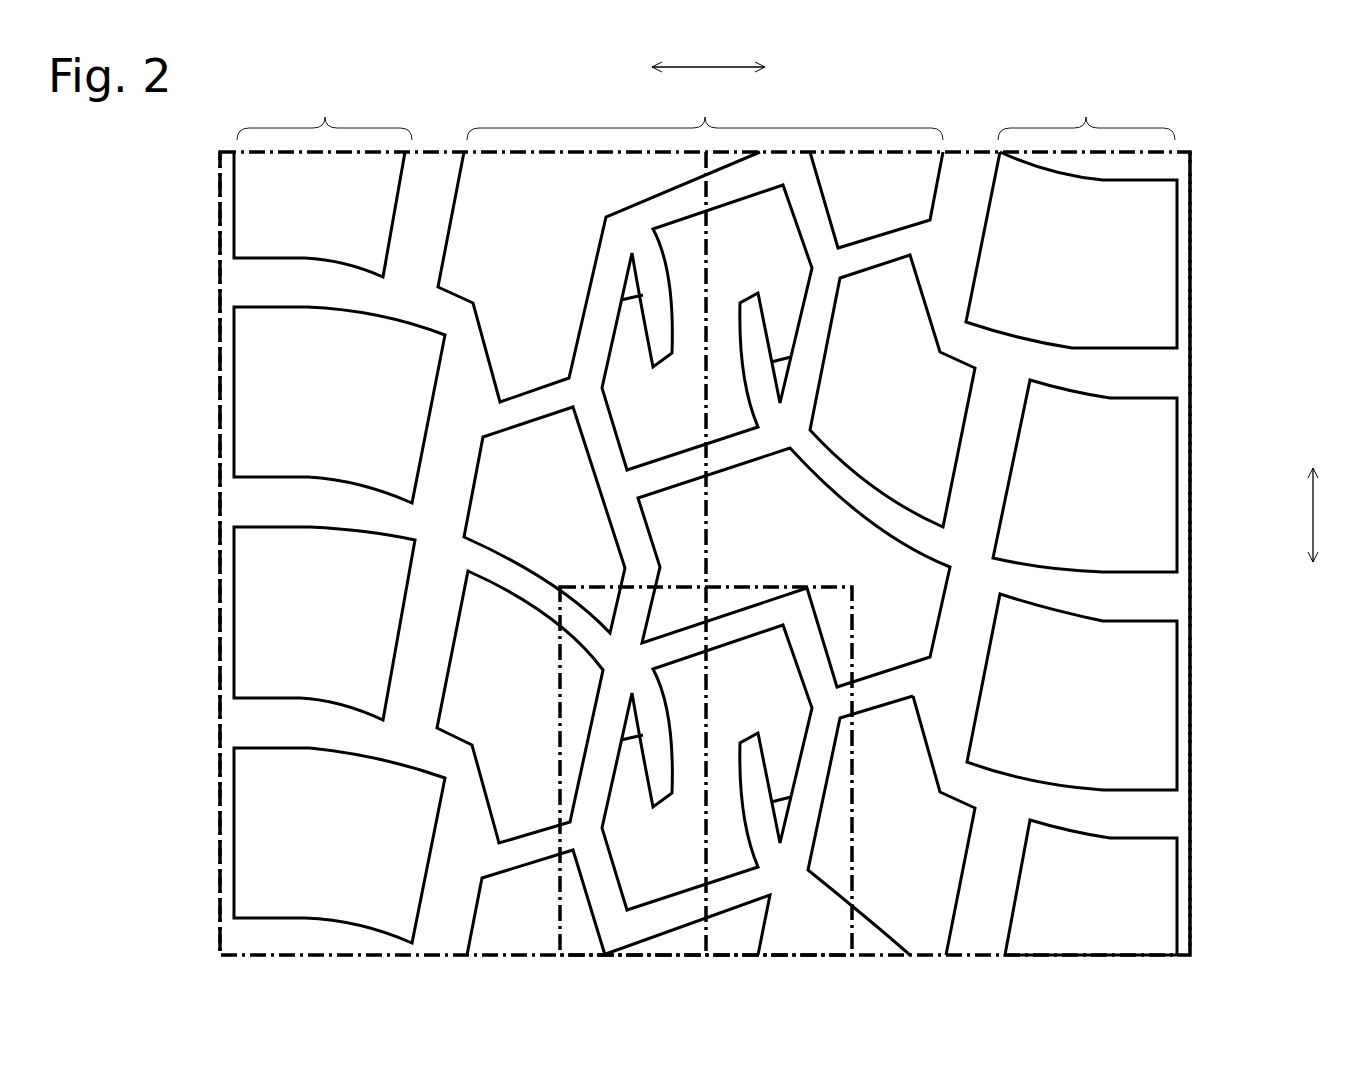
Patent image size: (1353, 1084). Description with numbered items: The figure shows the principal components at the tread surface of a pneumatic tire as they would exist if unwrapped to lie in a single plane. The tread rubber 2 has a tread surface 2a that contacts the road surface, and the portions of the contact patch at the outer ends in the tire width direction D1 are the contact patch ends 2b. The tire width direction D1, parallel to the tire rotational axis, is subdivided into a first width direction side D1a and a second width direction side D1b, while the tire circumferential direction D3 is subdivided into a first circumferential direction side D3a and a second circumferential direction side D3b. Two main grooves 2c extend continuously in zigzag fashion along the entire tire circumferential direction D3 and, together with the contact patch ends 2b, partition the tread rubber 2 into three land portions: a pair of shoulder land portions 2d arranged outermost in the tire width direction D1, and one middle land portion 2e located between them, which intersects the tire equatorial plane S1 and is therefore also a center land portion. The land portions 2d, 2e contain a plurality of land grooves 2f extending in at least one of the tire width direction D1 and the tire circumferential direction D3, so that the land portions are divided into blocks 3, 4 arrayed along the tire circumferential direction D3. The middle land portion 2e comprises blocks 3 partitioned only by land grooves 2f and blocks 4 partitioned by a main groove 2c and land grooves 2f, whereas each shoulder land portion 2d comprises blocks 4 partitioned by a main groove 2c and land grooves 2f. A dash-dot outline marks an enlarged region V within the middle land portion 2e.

The tread rubber 2 is at (1174, 170).
The tread surface 2a is at (1135, 253).
The contact patch end 2b is at (1178, 312).
The main groove 2c is at (437, 149).
The shoulder land portion 2d is at (705, 522).
The middle land portion 2e is at (693, 522).
The land groove 2f is at (596, 300).
The block 3 is at (797, 312).
The block 4 is at (455, 194).
The tire equatorial plane S1 is at (704, 172).
The enlarged region V is at (589, 582).
The tire width direction D1 is at (708, 52).
The first width direction side D1a is at (790, 67).
The second width direction side D1b is at (624, 67).
The tire circumferential direction D3 is at (1333, 515).
The first circumferential direction side D3a is at (1313, 586).
The second circumferential direction side D3b is at (1313, 449).